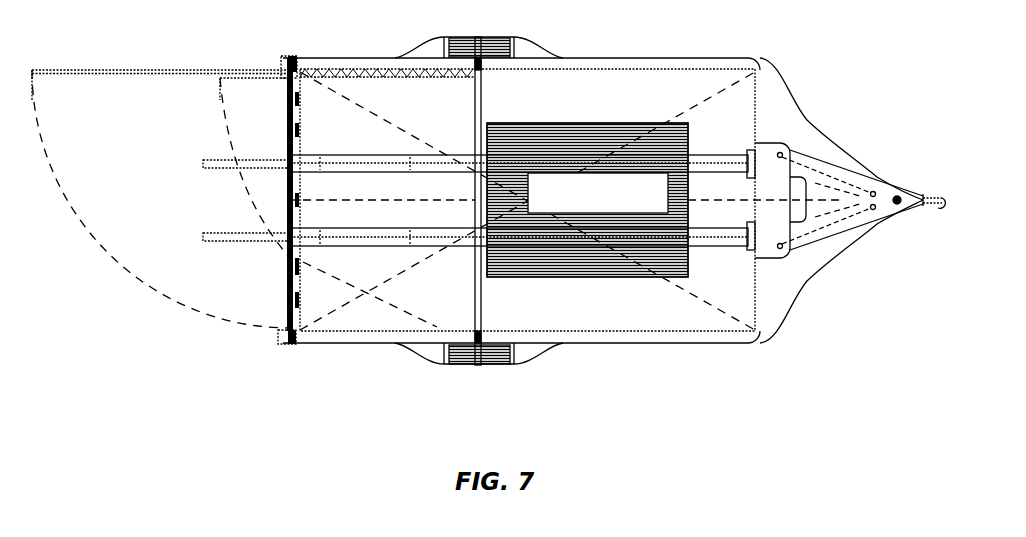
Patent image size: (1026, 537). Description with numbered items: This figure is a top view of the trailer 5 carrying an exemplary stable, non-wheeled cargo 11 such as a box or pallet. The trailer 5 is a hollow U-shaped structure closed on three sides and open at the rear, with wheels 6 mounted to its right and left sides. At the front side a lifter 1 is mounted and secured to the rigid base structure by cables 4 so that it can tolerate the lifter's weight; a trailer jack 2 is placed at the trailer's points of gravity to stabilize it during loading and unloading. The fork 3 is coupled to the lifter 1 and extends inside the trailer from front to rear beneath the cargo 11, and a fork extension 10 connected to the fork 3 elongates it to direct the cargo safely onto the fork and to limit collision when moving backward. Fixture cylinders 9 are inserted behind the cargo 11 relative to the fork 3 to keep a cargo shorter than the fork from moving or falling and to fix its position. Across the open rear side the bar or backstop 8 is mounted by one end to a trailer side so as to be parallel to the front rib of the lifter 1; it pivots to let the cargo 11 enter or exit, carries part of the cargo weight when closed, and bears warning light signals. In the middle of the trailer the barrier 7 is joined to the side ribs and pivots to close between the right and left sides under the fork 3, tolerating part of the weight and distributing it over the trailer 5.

The lifter 1 is at (776, 142).
The trailer jack 2 is at (296, 62).
The fork 3 is at (460, 238).
The cables 4 is at (840, 222).
The trailer 5 is at (847, 287).
The wheels 6 is at (502, 37).
The barrier 7 is at (478, 148).
The bar (backstop) 8 is at (165, 69).
The fixture cylinder 9 is at (322, 156).
The fork extension 10 is at (204, 162).
The cargo 11 is at (588, 124).